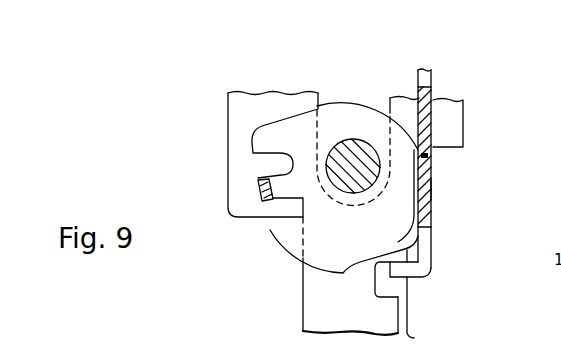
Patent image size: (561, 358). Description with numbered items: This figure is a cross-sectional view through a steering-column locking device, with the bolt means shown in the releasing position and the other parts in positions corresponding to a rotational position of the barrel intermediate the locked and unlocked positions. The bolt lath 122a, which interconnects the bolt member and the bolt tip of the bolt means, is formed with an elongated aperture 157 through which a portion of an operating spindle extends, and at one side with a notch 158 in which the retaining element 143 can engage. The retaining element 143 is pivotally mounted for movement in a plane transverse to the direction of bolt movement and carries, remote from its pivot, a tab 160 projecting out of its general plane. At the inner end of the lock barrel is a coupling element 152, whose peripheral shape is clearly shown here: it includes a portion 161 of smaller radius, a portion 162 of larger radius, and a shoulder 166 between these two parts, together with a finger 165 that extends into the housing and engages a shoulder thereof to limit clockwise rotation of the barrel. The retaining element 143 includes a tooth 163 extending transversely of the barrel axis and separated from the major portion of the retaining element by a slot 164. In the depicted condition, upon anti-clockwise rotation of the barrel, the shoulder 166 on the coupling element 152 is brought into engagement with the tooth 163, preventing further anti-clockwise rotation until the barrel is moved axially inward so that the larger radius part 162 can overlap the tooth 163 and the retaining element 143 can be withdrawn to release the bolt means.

The elongated aperture 157 is at (320, 106).
The smaller radius portion 161 is at (376, 122).
The slot 164 is at (433, 157).
The finger 165 is at (262, 192).
The tooth 163 is at (431, 190).
The larger radius portion 162 is at (431, 226).
The shoulder 166 is at (433, 246).
The retaining element 143 is at (437, 262).
The tab 160 is at (398, 281).
The notch 158 is at (407, 333).
The coupling element 152 is at (300, 258).
The bolt lath 122a is at (327, 318).